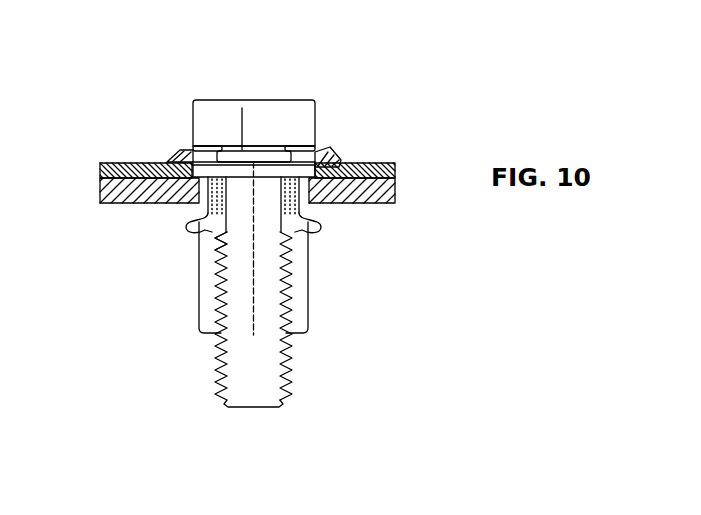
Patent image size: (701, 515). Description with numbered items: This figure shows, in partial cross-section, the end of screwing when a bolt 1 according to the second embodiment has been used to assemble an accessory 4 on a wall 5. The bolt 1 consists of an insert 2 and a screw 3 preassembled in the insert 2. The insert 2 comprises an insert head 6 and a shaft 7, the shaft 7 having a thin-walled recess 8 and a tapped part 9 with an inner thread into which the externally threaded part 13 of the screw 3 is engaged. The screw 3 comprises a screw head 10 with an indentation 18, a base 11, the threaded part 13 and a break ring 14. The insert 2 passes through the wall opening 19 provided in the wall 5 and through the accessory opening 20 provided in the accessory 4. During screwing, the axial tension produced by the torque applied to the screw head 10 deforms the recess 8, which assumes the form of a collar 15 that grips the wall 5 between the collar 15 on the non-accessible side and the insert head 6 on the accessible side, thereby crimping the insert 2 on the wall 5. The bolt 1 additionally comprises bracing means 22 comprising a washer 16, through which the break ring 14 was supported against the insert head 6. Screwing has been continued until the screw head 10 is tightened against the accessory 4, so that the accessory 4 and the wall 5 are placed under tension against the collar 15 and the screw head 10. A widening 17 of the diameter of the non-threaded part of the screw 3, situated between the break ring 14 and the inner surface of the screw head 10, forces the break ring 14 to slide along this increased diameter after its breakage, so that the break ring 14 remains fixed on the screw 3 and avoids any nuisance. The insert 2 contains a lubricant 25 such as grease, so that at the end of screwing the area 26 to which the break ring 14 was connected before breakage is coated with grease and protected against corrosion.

The bolt 1 is at (124, 56).
The insert 2 is at (178, 307).
The screw 3 is at (203, 97).
The accessory 4 is at (94, 164).
The wall 5 is at (118, 192).
The insert head 6 is at (187, 178).
The shaft 7 is at (196, 239).
The recess 8 is at (207, 212).
The tapped part 9 is at (215, 340).
The screw head 10 is at (302, 107).
The base 11 is at (338, 160).
The threaded part 13 is at (286, 279).
The break ring 14 is at (242, 110).
The collar 15 is at (323, 228).
The washer 16 is at (318, 153).
The widening 17 is at (200, 222).
The indentation 18 is at (320, 107).
The wall opening 19 is at (325, 190).
The accessory opening 20 is at (350, 164).
The bracing means 22 is at (206, 153).
The lubricant 25 is at (300, 216).
The area 26 is at (213, 235).